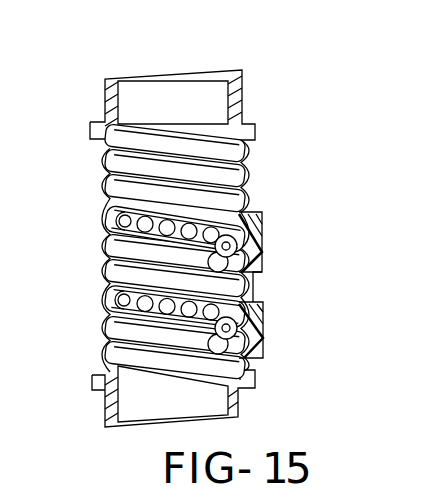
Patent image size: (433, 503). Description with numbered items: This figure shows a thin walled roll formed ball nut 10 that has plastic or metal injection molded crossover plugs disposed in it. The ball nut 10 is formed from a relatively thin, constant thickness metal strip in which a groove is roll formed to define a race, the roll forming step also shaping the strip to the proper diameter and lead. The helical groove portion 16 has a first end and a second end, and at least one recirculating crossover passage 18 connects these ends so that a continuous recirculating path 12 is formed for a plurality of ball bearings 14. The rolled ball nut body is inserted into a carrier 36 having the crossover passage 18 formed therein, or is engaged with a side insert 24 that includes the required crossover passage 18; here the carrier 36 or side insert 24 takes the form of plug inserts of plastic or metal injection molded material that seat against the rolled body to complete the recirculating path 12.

The ball nut 10 is at (312, 22).
The recirculating path 12 is at (181, 208).
The ball bearings 14 is at (118, 301).
The helical groove portion 16 is at (118, 213).
The crossover passage 18 is at (233, 262).
The side insert 24 is at (264, 232).
The carrier 36 is at (264, 322).